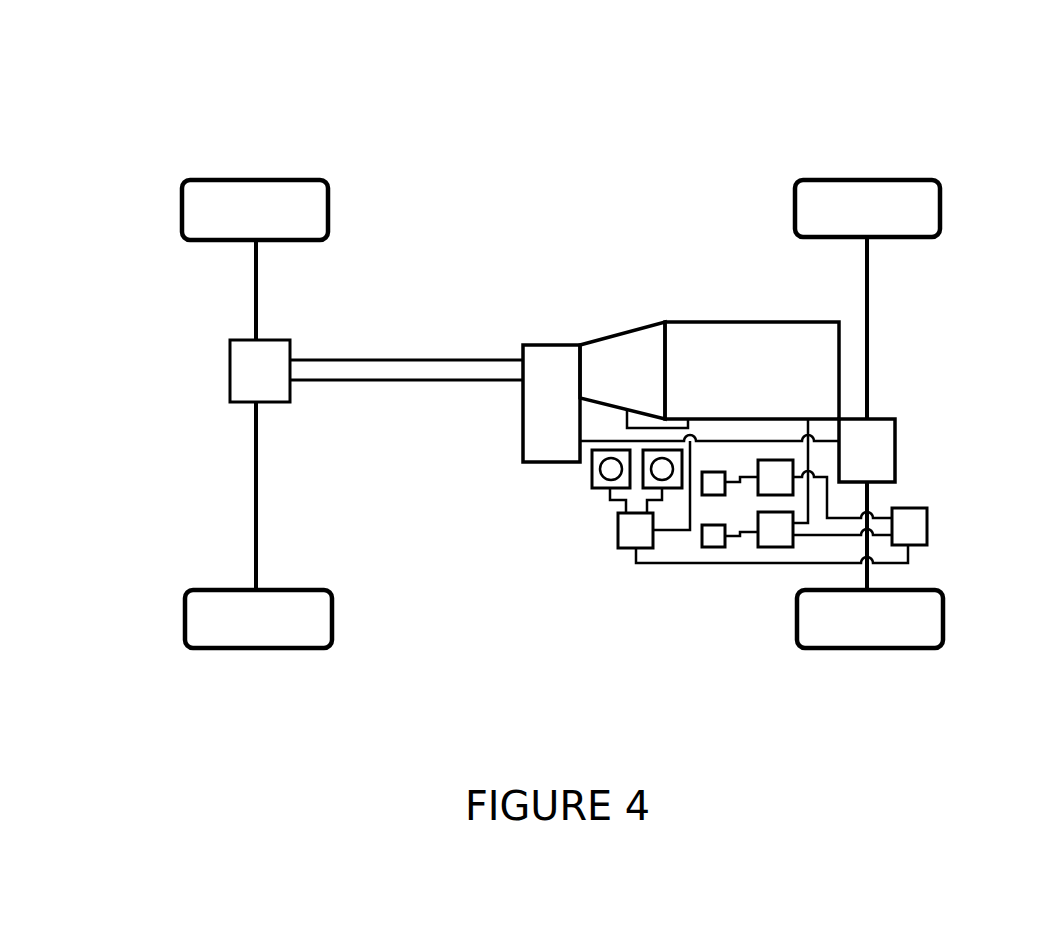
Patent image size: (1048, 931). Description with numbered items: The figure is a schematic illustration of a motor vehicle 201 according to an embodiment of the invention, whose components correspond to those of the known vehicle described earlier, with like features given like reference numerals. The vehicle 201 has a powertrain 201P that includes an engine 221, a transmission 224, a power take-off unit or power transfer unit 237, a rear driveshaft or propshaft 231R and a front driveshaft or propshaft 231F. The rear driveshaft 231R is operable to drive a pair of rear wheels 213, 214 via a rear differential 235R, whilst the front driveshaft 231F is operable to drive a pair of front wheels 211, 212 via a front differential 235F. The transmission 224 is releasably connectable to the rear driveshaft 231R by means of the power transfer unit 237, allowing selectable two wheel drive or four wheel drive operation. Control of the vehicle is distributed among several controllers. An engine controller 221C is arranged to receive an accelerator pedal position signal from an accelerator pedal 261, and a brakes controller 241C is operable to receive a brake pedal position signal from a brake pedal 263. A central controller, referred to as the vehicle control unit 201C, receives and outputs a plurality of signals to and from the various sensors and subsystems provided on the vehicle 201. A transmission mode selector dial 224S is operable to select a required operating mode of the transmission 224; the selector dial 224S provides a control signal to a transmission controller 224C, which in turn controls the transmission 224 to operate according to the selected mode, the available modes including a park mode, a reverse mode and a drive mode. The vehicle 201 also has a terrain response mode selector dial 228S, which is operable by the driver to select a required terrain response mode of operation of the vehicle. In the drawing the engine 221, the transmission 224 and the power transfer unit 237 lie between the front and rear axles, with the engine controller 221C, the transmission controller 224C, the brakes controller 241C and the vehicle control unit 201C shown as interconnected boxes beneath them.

The motor vehicle 201 is at (835, 126).
The powertrain 201P is at (748, 204).
The vehicle control unit 201C is at (913, 527).
The front wheel 211 is at (922, 180).
The front wheel 212 is at (918, 648).
The rear wheel 213 is at (215, 180).
The rear wheel 214 is at (215, 650).
The engine 221 is at (757, 333).
The engine controller 221C is at (773, 530).
The transmission 224 is at (645, 347).
The transmission mode selector dial 224S is at (593, 473).
The transmission controller 224C is at (628, 537).
The terrain response mode selector dial 228S is at (658, 456).
The rear driveshaft 231R is at (400, 372).
The front driveshaft 231F is at (831, 445).
The rear differential 235R is at (258, 378).
The front differential 235F is at (880, 450).
The power take-off unit 237 is at (535, 343).
The brakes controller 241C is at (776, 458).
The accelerator pedal 261 is at (714, 538).
The brake pedal 263 is at (710, 486).